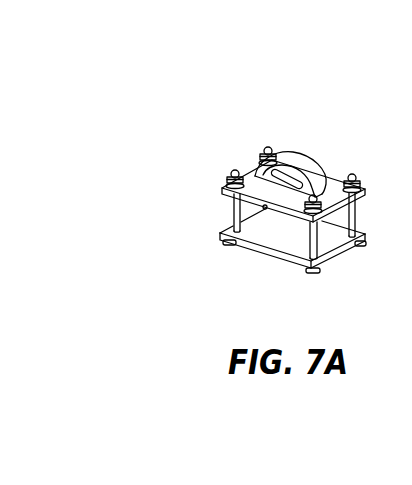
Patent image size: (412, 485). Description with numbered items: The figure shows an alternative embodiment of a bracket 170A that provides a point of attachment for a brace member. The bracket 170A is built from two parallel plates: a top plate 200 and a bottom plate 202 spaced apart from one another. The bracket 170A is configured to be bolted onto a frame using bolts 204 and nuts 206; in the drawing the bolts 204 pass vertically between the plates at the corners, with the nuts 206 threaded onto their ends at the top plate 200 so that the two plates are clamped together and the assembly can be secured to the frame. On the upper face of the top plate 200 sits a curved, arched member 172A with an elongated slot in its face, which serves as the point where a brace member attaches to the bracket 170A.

The bracket 170A is at (261, 133).
The curved clamp bracket 172A is at (303, 152).
The top plate 200 is at (253, 163).
The bottom plate 202 is at (272, 235).
The bolts 204 is at (258, 203).
The nuts 206 is at (226, 183).